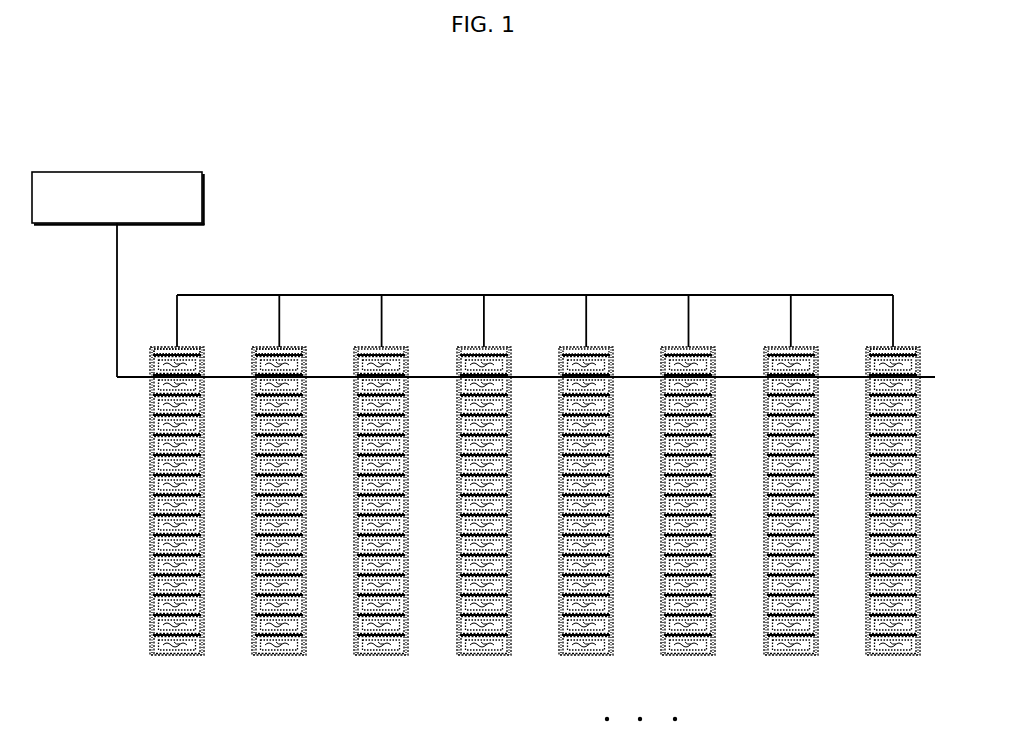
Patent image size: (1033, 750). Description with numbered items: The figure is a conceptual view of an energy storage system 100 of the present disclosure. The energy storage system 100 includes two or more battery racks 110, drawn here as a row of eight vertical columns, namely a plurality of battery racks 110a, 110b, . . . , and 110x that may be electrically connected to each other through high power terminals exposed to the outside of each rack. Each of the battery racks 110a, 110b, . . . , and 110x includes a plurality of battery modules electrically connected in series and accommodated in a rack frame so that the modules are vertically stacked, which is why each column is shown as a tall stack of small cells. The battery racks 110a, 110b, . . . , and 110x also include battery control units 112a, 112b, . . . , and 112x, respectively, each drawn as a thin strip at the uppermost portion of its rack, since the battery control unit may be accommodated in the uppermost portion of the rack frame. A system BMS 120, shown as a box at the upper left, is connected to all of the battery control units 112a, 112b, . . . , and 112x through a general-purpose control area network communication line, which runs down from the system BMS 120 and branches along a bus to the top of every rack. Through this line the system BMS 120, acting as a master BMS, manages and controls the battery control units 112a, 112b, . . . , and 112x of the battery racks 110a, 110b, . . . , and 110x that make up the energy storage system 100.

The energy storage system 100 is at (925, 149).
The battery rack 110 is at (116, 414).
The first battery rack 110a is at (176, 656).
The battery rack 110b is at (278, 656).
The battery rack 110x is at (893, 656).
The battery control unit 112a is at (191, 356).
The battery control unit 112b is at (293, 356).
The battery control unit 112x is at (909, 354).
The system BMS 120 is at (117, 171).